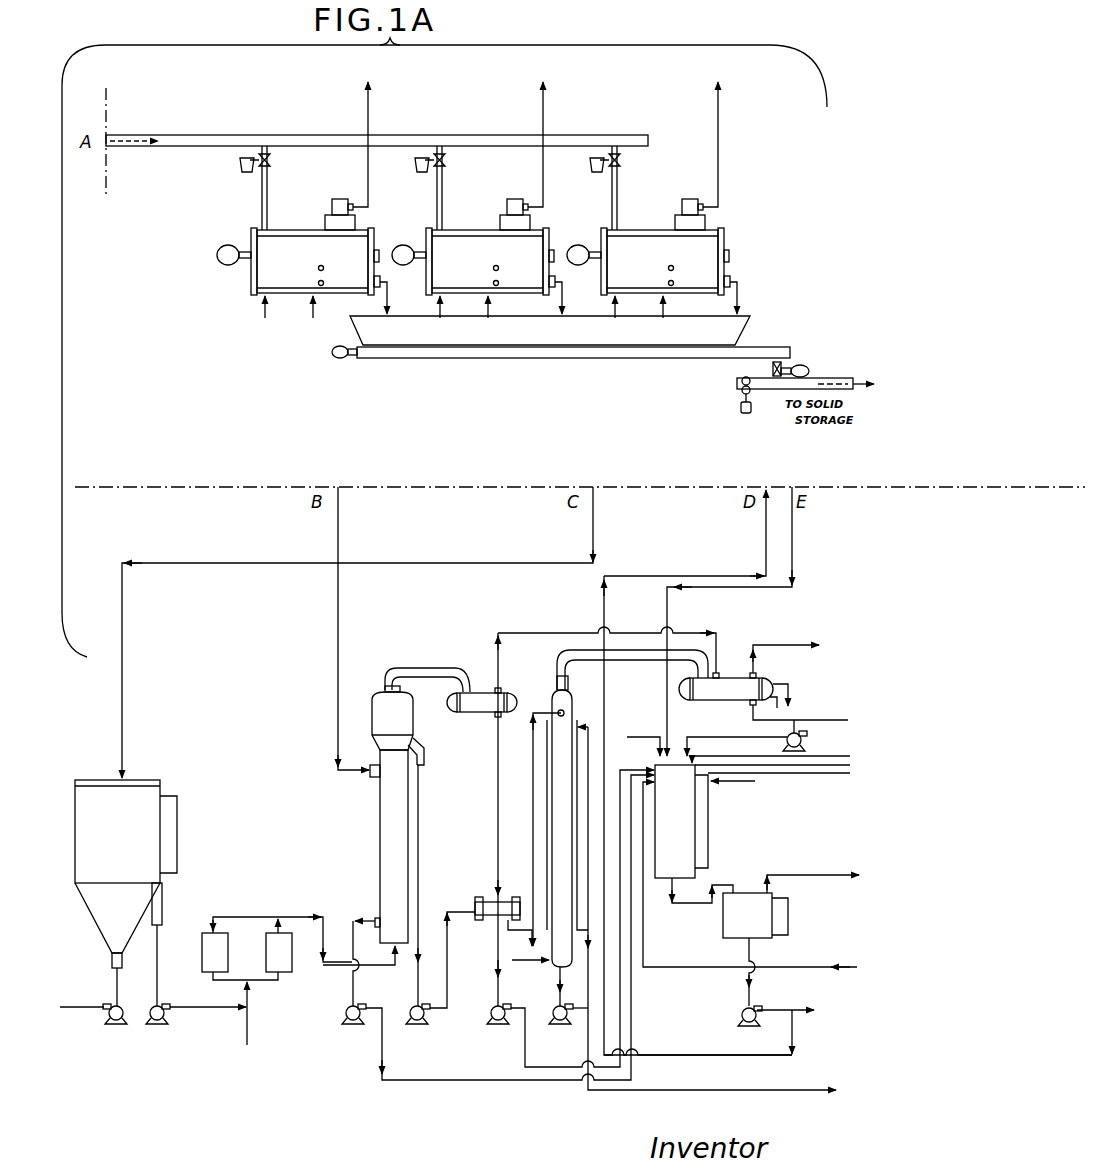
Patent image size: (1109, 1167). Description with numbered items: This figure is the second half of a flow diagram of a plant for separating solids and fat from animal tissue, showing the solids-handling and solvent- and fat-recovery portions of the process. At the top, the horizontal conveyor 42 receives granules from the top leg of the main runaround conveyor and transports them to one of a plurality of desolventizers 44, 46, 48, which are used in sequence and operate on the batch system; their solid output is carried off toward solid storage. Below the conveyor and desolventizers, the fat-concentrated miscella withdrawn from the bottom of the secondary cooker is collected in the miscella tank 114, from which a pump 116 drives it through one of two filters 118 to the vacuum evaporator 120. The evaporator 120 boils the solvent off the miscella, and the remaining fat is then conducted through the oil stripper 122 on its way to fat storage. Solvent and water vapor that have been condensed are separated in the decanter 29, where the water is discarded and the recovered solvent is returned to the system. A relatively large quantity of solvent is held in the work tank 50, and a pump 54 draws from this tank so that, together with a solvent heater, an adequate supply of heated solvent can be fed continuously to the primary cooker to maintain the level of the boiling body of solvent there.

The horizontal conveyor 42 is at (204, 140).
The desolventizer 44 is at (287, 243).
The desolventizer 46 is at (456, 243).
The desolventizer 48 is at (635, 240).
The miscella tank 114 is at (85, 783).
The pump 116 is at (158, 1025).
The filters 118 is at (292, 968).
The vacuum evaporator 120 is at (382, 803).
The oil stripper 122 is at (553, 769).
The decanter 29 is at (688, 832).
The work tank 50 is at (722, 929).
The pump 54 is at (740, 1014).